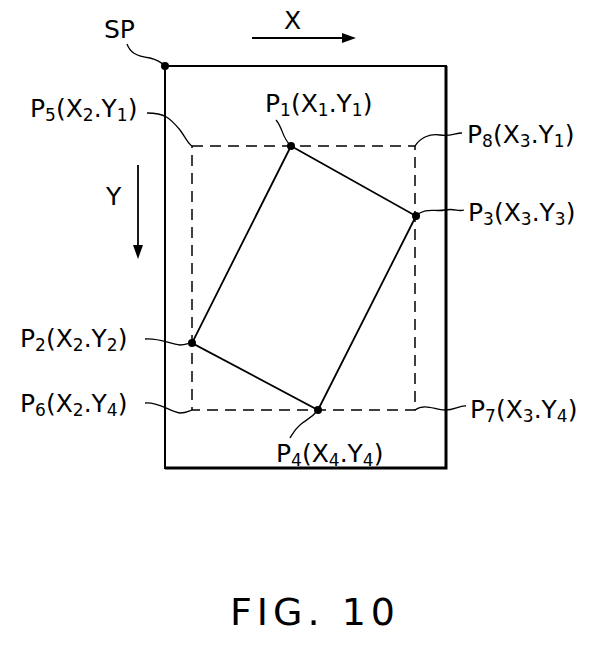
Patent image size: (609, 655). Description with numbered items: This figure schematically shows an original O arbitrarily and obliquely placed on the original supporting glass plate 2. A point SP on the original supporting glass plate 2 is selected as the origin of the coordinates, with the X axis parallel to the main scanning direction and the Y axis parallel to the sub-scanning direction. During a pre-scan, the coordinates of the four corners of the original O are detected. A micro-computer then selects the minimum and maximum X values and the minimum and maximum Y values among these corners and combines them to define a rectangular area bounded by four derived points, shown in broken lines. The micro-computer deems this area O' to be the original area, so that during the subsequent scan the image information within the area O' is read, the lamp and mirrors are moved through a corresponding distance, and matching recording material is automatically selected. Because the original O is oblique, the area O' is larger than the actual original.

The original supporting glass plate 2 is at (446, 338).
The original O is at (342, 278).
The original area O' is at (303, 334).